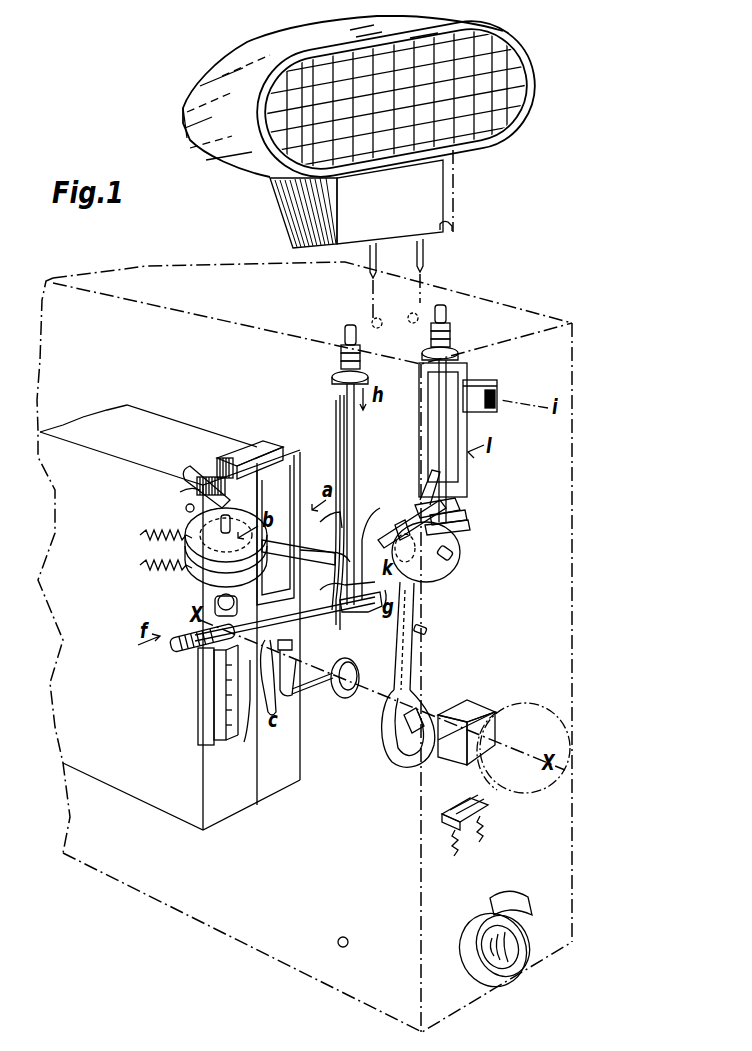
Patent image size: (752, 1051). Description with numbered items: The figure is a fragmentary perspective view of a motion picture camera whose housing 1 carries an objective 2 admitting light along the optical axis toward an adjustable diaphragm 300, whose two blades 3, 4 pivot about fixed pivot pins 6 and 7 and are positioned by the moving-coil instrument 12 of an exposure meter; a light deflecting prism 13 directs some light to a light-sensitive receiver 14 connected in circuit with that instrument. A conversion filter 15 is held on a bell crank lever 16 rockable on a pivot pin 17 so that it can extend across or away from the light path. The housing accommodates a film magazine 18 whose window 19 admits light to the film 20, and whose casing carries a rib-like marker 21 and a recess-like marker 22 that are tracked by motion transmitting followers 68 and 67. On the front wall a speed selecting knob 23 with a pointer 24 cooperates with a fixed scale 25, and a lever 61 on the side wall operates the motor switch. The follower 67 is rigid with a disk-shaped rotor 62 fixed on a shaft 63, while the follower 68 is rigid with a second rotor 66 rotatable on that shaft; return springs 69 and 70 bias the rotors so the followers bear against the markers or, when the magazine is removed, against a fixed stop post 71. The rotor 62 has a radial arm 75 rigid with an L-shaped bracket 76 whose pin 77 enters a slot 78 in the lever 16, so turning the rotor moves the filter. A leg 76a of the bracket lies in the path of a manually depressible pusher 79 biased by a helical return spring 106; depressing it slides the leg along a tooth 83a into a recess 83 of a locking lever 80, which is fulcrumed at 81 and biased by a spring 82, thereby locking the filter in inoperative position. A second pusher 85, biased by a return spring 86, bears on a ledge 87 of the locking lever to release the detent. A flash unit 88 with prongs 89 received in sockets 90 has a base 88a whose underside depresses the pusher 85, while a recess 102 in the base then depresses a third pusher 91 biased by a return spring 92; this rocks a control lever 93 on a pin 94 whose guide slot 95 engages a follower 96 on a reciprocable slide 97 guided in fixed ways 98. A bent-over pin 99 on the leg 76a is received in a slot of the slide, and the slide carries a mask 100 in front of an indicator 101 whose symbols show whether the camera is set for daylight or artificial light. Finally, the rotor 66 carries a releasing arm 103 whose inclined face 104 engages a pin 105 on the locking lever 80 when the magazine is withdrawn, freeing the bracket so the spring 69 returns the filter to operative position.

The housing 1 is at (583, 614).
The objective 2 is at (575, 720).
The diaphragm blade 3 is at (432, 702).
The diaphragm blade 4 is at (398, 742).
The pivot pin 6 is at (412, 612).
The pivot pin 7 is at (426, 630).
The moving-coil instrument 12 is at (492, 528).
The light deflecting prism 13 is at (462, 708).
The light-sensitive receiver 14 is at (482, 808).
The conversion filter 15 is at (352, 694).
The bell crank lever 16 is at (320, 692).
The pivot pin 17 is at (270, 716).
The film magazine 18 is at (130, 800).
The window 19 is at (212, 710).
The motion picture film 20 is at (212, 693).
The adjusting element or marker 21 is at (262, 443).
The adjusting element or marker 22 is at (200, 478).
The speed selecting knob 23 is at (520, 955).
The index or pointer 24 is at (525, 918).
The fixed scale 25 is at (512, 893).
The lever 61 is at (338, 946).
The disk-shaped carrier (rotor) 62 is at (198, 582).
The shaft 63 is at (229, 512).
The disk-shaped carrier (rotor) 66 is at (260, 518).
The motion transmitting follower 67 is at (185, 509).
The motion transmitting follower 68 is at (180, 492).
The return spring 69 is at (140, 563).
The return spring 70 is at (142, 534).
The fixed stop post 71 is at (218, 470).
The radial extension or arm 75 is at (272, 560).
The L-shaped bracket 76 is at (212, 606).
The leg of bracket 76a is at (318, 612).
The pin 77 is at (292, 644).
The slot 78 is at (300, 662).
The manually depressible pusher 79 is at (175, 645).
The locking lever 80 is at (239, 713).
The fulcrum 81 is at (231, 700).
The spring 82 is at (366, 505).
The depression or recess 83 is at (366, 628).
The projection or tooth 83a is at (336, 480).
The manually depressible pusher 85 is at (356, 415).
The helical return spring 86 is at (340, 366).
The ledge or platform 87 is at (368, 613).
The flash unit 88 is at (528, 108).
The base of flash unit 88a is at (455, 178).
The terminals or prongs 89 is at (416, 258).
The sockets 90 is at (410, 316).
The pusher 91 is at (446, 380).
The return spring 92 is at (452, 334).
The control lever 93 is at (458, 520).
The pin 94 is at (410, 505).
The guide slot 95 is at (458, 508).
The pin-shaped follower 96 is at (424, 500).
The reciprocable slide 97 is at (405, 524).
The fixed ways 98 is at (425, 470).
The bent-over pin 99 is at (345, 548).
The mask 100 is at (495, 378).
The indicator 101 is at (498, 398).
The depression or recess 102 is at (452, 226).
The releasing or disengaging arm 103 is at (335, 514).
The inclined face 104 is at (340, 455).
The pin 105 is at (344, 440).
The helical return spring 106 is at (214, 668).
The adjustable diaphragm 300 is at (444, 688).